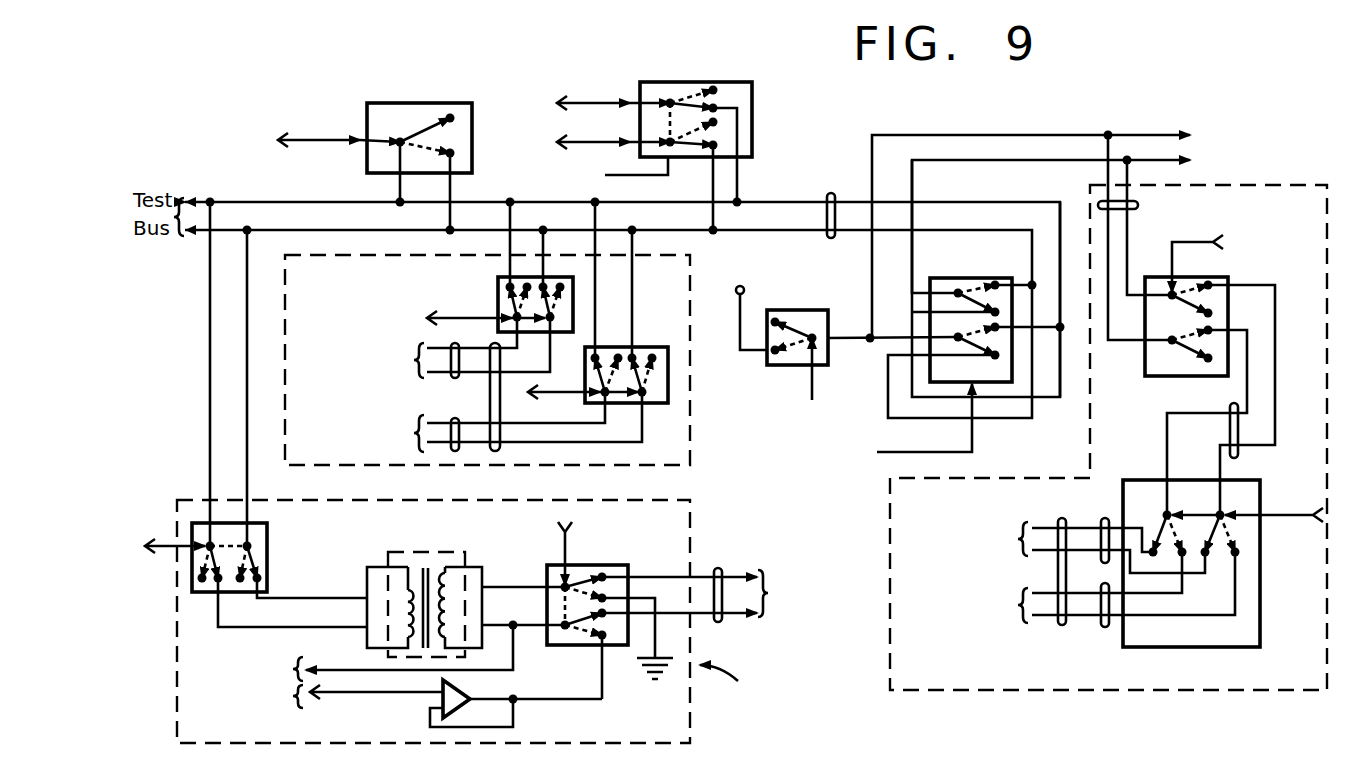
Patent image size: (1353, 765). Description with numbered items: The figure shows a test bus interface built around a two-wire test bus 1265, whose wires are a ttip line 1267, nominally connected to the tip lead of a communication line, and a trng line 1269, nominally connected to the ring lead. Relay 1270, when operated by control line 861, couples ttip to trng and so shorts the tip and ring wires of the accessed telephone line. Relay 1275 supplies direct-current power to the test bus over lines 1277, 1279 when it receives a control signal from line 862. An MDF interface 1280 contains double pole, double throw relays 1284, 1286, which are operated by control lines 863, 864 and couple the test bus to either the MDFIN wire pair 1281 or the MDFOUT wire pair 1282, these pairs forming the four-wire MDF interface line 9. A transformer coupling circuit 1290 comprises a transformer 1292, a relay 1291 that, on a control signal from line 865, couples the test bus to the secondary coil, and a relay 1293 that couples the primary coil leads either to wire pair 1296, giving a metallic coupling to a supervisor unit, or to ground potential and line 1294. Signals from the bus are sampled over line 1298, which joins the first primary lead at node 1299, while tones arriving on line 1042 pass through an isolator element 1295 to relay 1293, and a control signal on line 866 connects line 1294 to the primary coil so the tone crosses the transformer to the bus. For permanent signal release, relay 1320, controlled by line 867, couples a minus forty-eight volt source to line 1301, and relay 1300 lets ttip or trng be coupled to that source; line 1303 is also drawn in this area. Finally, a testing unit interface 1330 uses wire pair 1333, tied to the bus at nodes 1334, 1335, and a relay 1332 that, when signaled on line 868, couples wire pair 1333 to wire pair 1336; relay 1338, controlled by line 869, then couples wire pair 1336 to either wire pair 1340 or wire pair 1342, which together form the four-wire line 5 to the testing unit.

The control line 861 is at (305, 138).
The relay 1270 is at (450, 103).
The line 1277 is at (583, 103).
The line 1279 is at (595, 142).
The relay 1275 is at (737, 82).
The control line 862 is at (605, 175).
The ttip line 1267 is at (203, 203).
The trng line 1269 is at (204, 236).
The test bus 1265 is at (832, 193).
The line 1301 is at (914, 136).
The TRC lead 1303 is at (938, 161).
The node 1334 is at (1108, 135).
The node 1335 is at (1127, 160).
The wire pair 1333 is at (1138, 205).
The control line 868 is at (1205, 240).
The double pole, double throw relay 1332 is at (1228, 277).
The relay 1300 is at (955, 278).
The relay 1320 is at (802, 310).
The double pole, double throw relay 1284 is at (498, 277).
The control line 863 is at (457, 317).
The MDFIN line 1281 is at (455, 345).
The MDF interface line 9 is at (490, 397).
The double pole, double throw relay 1286 is at (667, 347).
The control line 864 is at (558, 395).
The MDFOUT line 1282 is at (455, 457).
The MDF interface 1280 is at (697, 418).
The control line 867 is at (903, 452).
The wire pair 1336 is at (1230, 403).
The double pole, double throw relay 1338 is at (1130, 480).
The control line 869 is at (1285, 512).
The control line 865 is at (165, 545).
The double pole, double throw relay 1291 is at (268, 545).
The transformer 1292 is at (466, 542).
The control line 866 is at (563, 542).
The relay 1293 is at (620, 565).
The wire pair 1296 is at (718, 568).
The node 1299 is at (523, 608).
The line 1298 is at (350, 670).
The isolator element 1295 is at (472, 690).
The line 1294 is at (602, 672).
The line 1042 is at (348, 693).
The transformer coupling circuit 1290 is at (702, 526).
The testing unit interface 1330 is at (886, 508).
The four-wire line 5 is at (1060, 518).
The wire pair 1340 is at (1105, 518).
The wire pair 1342 is at (1105, 627).